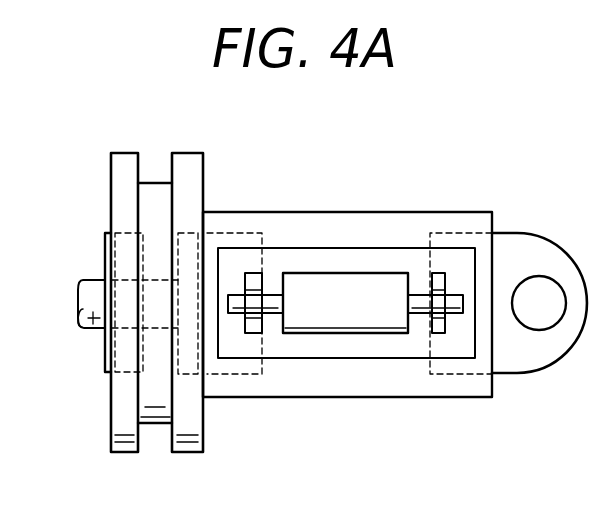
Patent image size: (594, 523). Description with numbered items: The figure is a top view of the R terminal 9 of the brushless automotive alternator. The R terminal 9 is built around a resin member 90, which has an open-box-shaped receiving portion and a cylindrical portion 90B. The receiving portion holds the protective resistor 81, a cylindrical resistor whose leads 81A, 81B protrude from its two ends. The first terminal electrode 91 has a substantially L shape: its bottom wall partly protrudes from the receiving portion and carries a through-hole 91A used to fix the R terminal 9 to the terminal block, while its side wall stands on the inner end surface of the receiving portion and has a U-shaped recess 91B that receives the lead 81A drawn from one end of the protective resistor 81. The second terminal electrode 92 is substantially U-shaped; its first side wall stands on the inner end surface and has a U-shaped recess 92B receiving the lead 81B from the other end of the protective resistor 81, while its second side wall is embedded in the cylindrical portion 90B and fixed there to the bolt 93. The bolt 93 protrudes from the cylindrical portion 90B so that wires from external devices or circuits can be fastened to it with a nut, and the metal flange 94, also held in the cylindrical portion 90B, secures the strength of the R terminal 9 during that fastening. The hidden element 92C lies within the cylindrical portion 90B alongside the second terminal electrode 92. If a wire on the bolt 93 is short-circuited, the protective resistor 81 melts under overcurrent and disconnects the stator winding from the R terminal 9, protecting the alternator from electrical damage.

The R terminal 9 is at (463, 181).
The resin member 90 is at (377, 220).
The cylindrical portion 90B is at (120, 185).
The second terminal electrode 92 is at (227, 237).
The U-shaped recess 92B is at (246, 315).
The roller 92C is at (192, 233).
The protective resistor 81 is at (315, 280).
The lead 81A is at (422, 305).
The lead 81B is at (273, 305).
The first terminal electrode 91 is at (525, 240).
The through-hole 91A is at (547, 323).
The U-shaped recess 91B is at (450, 316).
The bolt 93 is at (93, 327).
The metal flange 94 is at (105, 248).